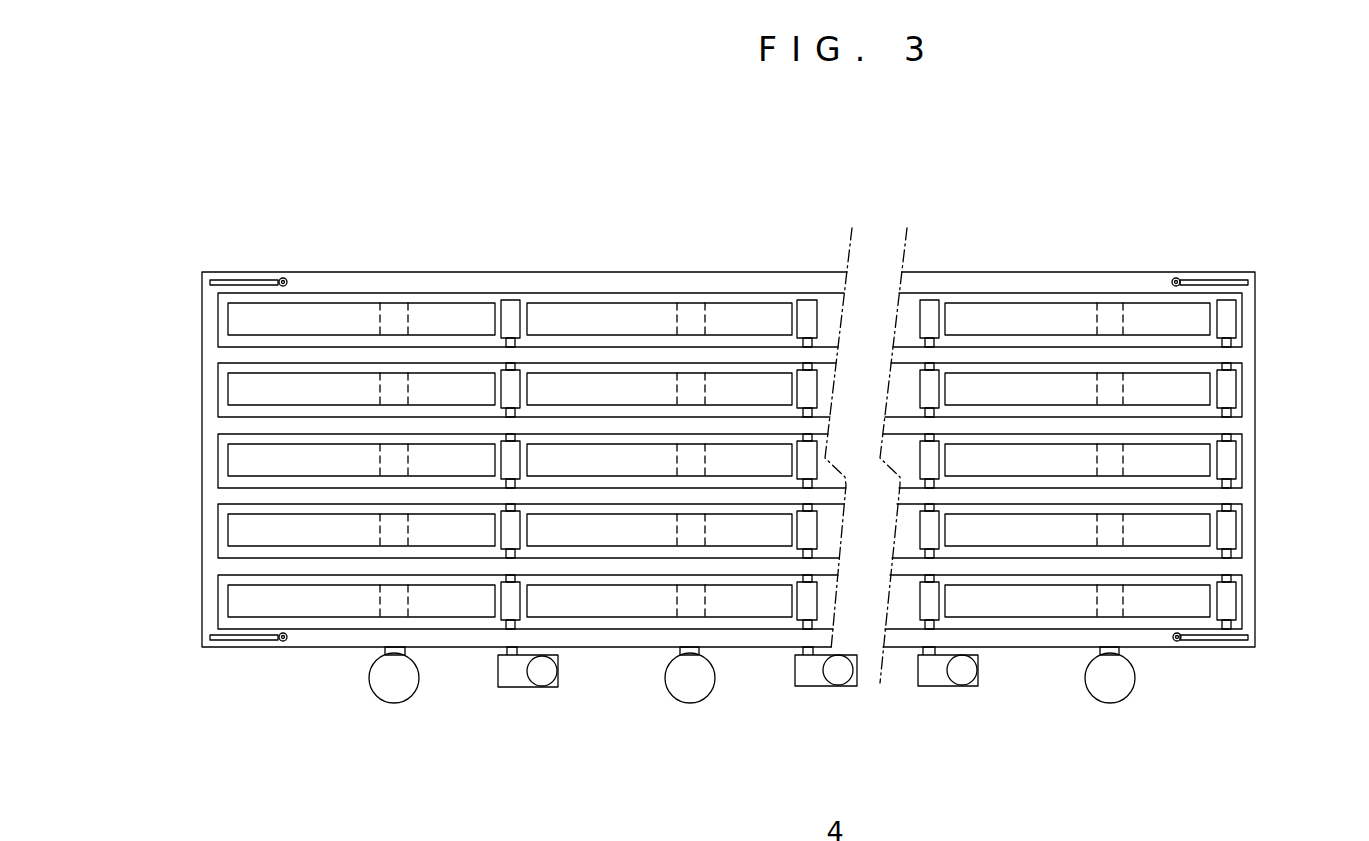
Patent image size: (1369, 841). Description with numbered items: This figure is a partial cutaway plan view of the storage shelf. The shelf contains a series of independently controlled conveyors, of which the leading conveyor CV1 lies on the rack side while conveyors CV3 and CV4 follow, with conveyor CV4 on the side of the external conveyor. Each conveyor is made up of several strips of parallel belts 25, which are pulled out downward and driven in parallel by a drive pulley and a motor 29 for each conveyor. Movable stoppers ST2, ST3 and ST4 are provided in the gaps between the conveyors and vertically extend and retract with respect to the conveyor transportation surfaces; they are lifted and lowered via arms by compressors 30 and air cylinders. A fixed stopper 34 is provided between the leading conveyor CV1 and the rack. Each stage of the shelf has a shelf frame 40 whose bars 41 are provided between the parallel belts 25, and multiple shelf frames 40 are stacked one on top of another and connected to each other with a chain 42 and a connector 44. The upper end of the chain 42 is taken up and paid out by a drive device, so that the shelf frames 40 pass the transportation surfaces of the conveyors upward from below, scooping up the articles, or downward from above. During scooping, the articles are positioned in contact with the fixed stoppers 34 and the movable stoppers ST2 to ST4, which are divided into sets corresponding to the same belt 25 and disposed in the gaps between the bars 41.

The belt 25 is at (317, 603).
The motor 29 is at (394, 693).
The compressor 30 is at (518, 683).
The fixed stopper 34 is at (1228, 392).
The shelf frame 40 is at (513, 280).
The bar 41 is at (630, 625).
The chain 42 is at (284, 278).
The connector 44 is at (247, 279).
The movable stopper ST2 is at (934, 602).
The movable stopper ST3 is at (806, 601).
The movable stopper ST4 is at (508, 599).
The conveyor CV1 is at (1015, 607).
The conveyor CV3 is at (625, 607).
The conveyor CV4 is at (242, 467).